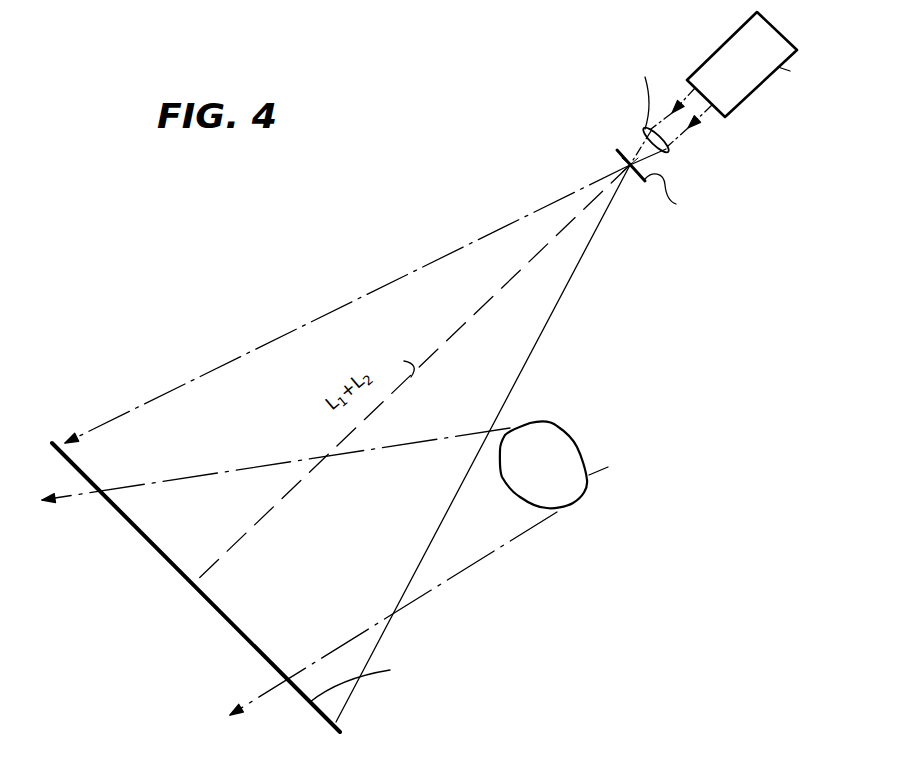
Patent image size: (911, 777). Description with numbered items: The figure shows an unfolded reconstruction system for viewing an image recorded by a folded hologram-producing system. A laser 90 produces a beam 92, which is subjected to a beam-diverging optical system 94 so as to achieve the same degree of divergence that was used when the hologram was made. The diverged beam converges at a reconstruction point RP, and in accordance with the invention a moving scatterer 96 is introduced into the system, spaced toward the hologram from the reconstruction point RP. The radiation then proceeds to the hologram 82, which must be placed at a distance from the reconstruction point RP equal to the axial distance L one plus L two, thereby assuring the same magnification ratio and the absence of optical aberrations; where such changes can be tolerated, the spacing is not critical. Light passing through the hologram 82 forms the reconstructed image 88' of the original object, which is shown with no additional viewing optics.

The laser 90 is at (750, 96).
The beam 92 is at (678, 136).
The beam-diverging optical system 94 is at (643, 130).
The moving scatterer 96 is at (646, 183).
The reconstruction point RP is at (594, 156).
The hologram 82 is at (200, 595).
The reconstructed image 88' is at (648, 454).